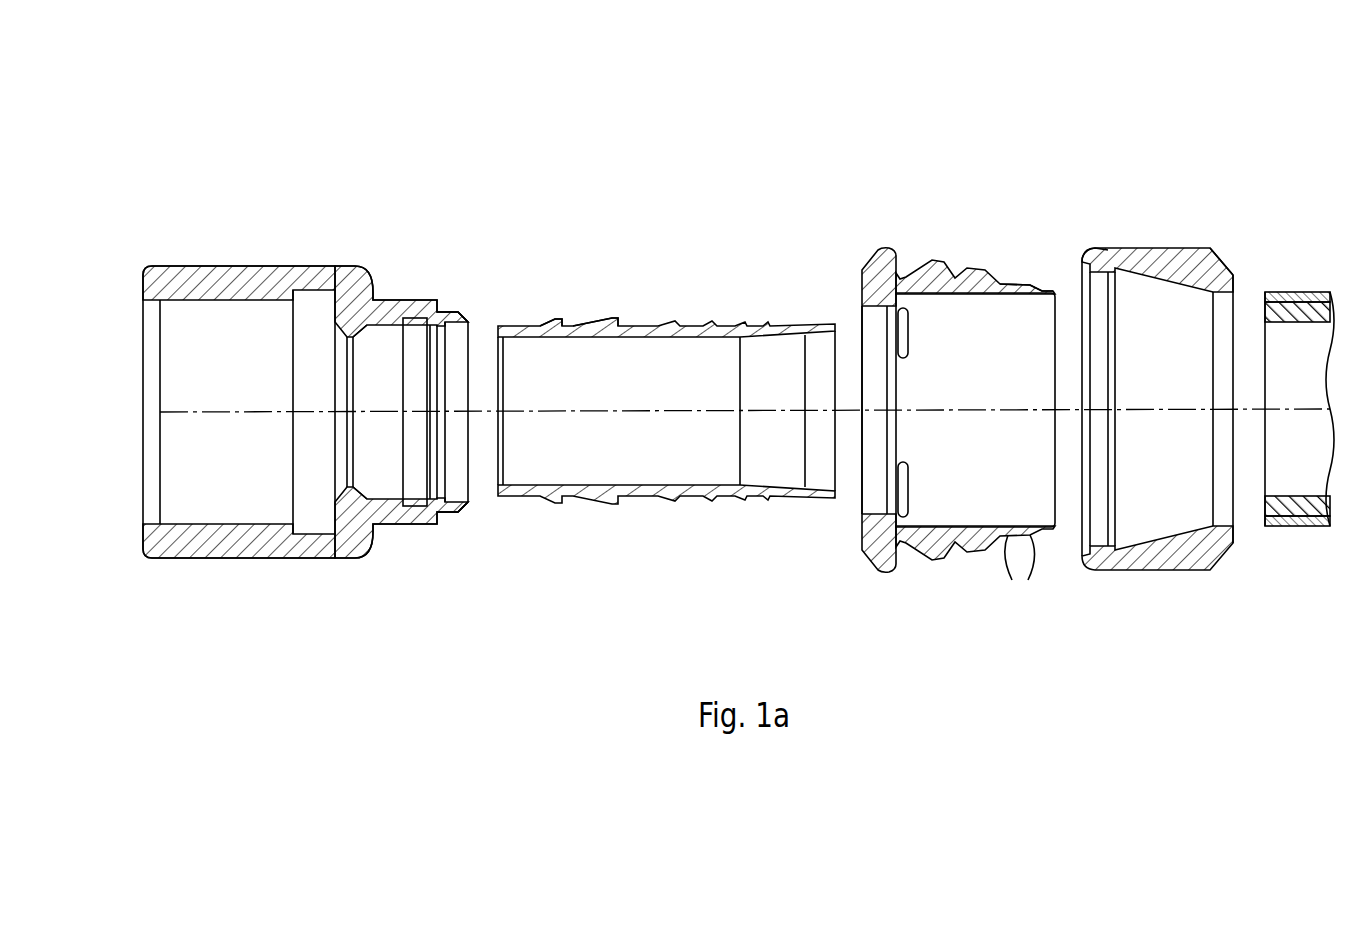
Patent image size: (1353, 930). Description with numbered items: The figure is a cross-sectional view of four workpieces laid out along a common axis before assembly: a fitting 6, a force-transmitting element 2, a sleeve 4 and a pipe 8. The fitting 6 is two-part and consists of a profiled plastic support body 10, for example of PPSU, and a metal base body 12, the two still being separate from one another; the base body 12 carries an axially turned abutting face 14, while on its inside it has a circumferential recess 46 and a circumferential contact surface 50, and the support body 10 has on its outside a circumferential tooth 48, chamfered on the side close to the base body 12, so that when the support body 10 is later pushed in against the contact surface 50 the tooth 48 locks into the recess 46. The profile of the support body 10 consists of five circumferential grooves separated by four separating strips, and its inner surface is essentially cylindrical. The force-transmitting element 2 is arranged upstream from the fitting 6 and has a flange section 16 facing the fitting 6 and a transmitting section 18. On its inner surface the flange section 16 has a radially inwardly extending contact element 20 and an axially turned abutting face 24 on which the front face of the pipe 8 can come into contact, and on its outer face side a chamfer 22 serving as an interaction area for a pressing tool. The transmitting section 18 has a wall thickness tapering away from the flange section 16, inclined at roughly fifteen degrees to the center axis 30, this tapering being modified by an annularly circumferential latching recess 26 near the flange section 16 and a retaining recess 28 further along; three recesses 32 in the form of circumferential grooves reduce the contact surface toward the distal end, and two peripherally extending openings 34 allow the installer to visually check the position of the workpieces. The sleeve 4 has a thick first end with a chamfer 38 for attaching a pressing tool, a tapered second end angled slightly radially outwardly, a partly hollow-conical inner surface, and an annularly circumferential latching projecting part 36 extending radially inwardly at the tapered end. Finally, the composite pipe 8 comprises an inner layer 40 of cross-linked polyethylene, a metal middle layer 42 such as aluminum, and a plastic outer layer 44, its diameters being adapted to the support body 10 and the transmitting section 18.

The force-transmitting element 2 is at (930, 374).
The sleeve 4 is at (1160, 186).
The fitting 6 is at (506, 92).
The pipe 8 is at (1299, 330).
The support body 10 is at (790, 494).
The base body 12 is at (352, 278).
The abutting face 14 is at (470, 320).
The flange section 16 is at (888, 573).
The transmitting section 18 is at (1005, 287).
The contact element 20 is at (890, 315).
The chamfer 22 is at (868, 251).
The abutting face 24 is at (905, 520).
The latching recess 26 is at (909, 566).
The retaining recess 28 is at (956, 262).
The center axis 30 is at (979, 409).
The recesses 32 is at (1036, 577).
The openings 34 is at (905, 325).
The latching projecting part 36 is at (1103, 263).
The chamfer 38 is at (1227, 258).
The inner layer 40 is at (1290, 322).
The middle layer 42 is at (1299, 524).
The outer layer 44 is at (1290, 298).
The circumferential recess 46 is at (413, 322).
The circumferential tooth 48 is at (557, 323).
The contact surface 50 is at (362, 332).